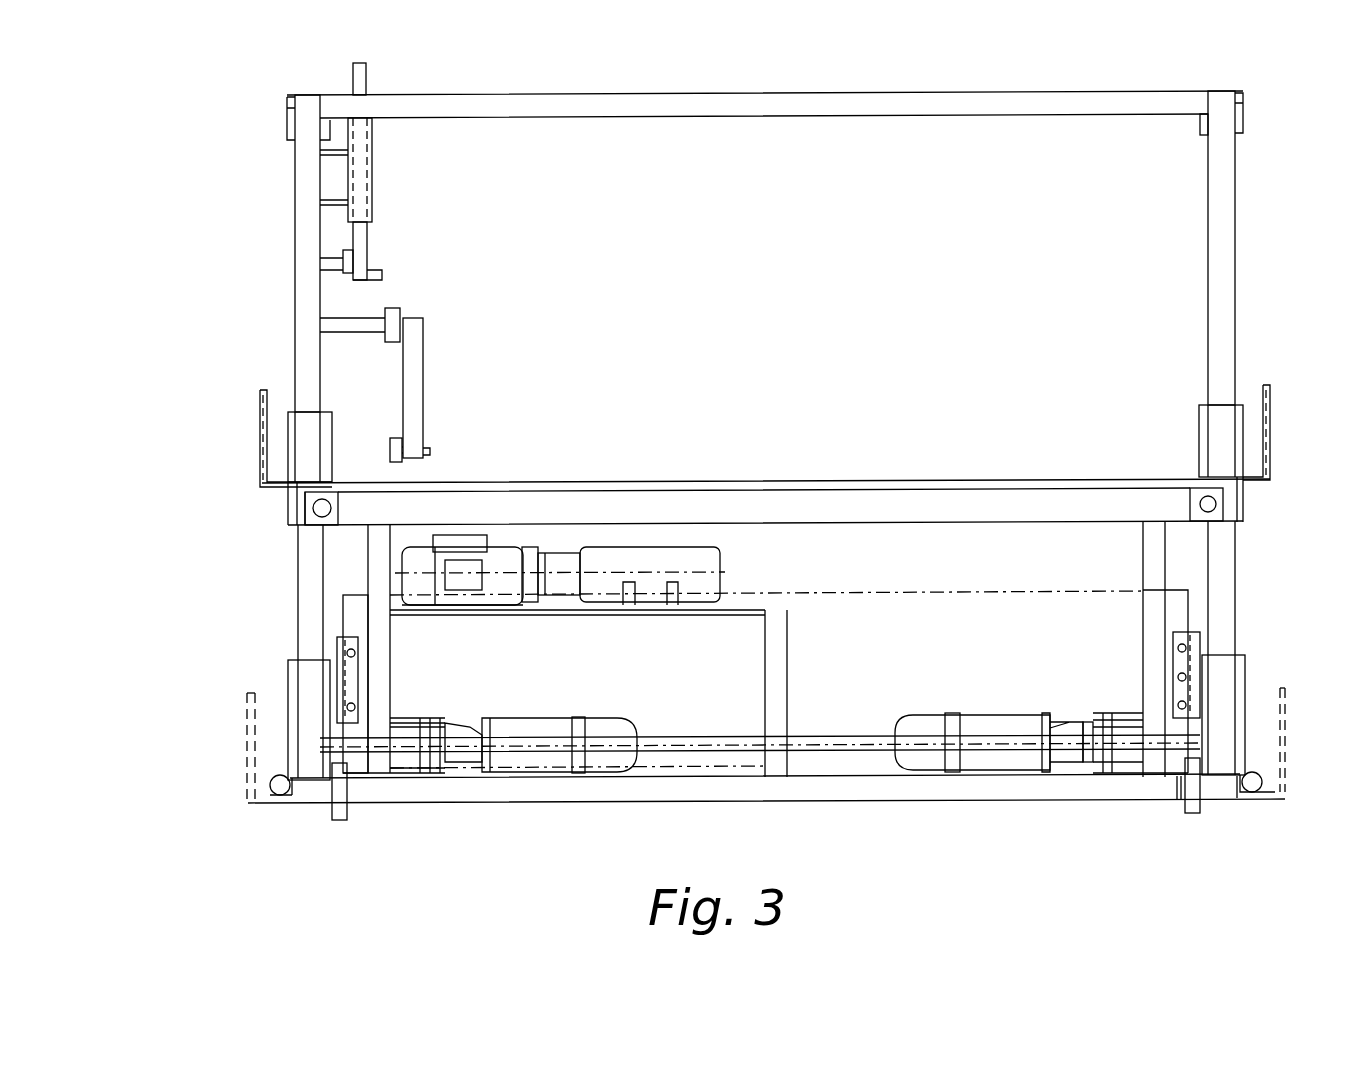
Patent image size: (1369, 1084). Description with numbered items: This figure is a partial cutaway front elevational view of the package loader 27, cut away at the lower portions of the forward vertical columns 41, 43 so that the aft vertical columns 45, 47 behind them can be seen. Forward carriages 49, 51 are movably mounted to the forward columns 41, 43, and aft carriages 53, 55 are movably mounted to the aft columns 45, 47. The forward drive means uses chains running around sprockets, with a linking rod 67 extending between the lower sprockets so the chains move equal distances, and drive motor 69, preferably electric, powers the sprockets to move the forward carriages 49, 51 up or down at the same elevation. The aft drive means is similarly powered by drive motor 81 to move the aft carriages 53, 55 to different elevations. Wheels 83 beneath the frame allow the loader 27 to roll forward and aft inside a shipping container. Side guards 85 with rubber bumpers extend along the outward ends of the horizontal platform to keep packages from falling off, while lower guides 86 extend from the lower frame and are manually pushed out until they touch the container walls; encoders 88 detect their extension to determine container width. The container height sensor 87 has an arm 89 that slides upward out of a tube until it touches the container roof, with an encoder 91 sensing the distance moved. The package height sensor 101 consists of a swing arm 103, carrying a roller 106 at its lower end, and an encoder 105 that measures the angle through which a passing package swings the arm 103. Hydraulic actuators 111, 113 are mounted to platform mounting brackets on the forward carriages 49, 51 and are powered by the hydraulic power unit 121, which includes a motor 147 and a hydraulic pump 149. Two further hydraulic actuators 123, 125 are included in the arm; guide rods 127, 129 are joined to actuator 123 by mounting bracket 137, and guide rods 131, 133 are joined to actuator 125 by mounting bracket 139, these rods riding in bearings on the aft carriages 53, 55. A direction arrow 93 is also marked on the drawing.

The loader 27 is at (1268, 289).
The forward vertical column 41 is at (300, 157).
The forward vertical column 43 is at (1225, 175).
The aft vertical column 45 is at (307, 560).
The aft vertical column 47 is at (1225, 553).
The forward carriage 49 is at (297, 423).
The forward carriage 51 is at (1222, 420).
The aft carriage 53 is at (300, 693).
The aft carriage 55 is at (1237, 700).
The linking rod 67 is at (830, 740).
The drive motor 69 is at (530, 720).
The drive motor 81 is at (990, 718).
The wheels 83 is at (345, 815).
The side guards 85 is at (262, 403).
The lower guides 86 is at (247, 727).
The container height sensor 87 is at (367, 140).
The encoders 88 is at (375, 192).
The arm 89 is at (361, 80).
The encoder 91 is at (352, 260).
The direction of movement 93 is at (226, 792).
The package height sensor 101 is at (440, 341).
The swing arm 103 is at (420, 368).
The encoder 105 is at (395, 312).
The roller 106 is at (393, 437).
The hydraulic actuator 111 is at (310, 506).
The hydraulic actuator 113 is at (1215, 504).
The hydraulic power unit 121 is at (570, 556).
The hydraulic actuator 123 is at (349, 680).
The hydraulic actuator 125 is at (1187, 645).
The guide rod 127 is at (356, 653).
The guide rod 129 is at (356, 707).
The guide rod 131 is at (1185, 660).
The guide rod 133 is at (1187, 702).
The mounting bracket 137 is at (343, 640).
The mounting bracket 139 is at (1172, 650).
The motor 147 is at (500, 560).
The hydraulic pump 149 is at (710, 558).